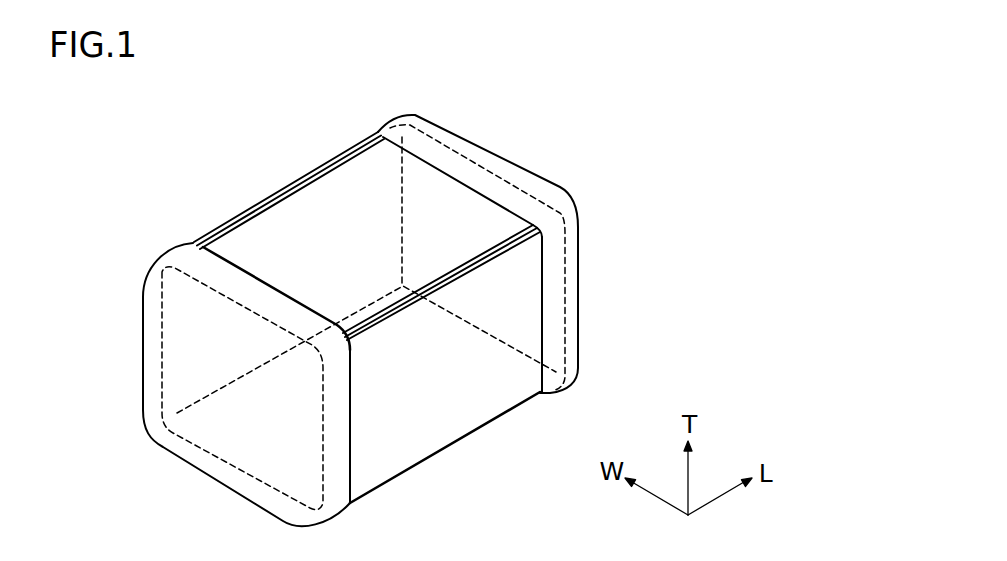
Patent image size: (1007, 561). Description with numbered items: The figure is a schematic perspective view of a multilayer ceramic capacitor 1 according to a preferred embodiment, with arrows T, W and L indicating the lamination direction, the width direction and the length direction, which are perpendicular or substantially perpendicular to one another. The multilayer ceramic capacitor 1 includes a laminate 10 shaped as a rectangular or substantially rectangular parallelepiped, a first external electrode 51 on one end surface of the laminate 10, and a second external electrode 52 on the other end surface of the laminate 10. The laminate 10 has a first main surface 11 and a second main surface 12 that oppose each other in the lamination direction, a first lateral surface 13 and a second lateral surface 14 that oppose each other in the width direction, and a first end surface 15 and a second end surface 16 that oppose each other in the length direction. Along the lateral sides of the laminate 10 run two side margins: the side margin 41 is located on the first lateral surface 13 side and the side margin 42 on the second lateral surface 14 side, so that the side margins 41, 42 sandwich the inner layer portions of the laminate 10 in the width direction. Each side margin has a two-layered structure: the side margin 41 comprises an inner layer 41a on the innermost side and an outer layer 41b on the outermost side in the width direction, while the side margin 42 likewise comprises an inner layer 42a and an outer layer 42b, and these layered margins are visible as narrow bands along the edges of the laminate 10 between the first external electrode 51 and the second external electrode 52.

The multilayer ceramic capacitor 1 is at (82, 165).
The laminate 10 is at (365, 168).
The first main surface 11 is at (392, 223).
The second main surface 12 is at (377, 447).
The first lateral surface 13 is at (450, 397).
The second lateral surface 14 is at (328, 230).
The first end surface 15 is at (237, 430).
The second end surface 16 is at (473, 213).
The side margin 41 is at (670, 217).
The inner layer 41a is at (543, 236).
The outer layer 41b is at (488, 256).
The side margin 42 is at (216, 141).
The inner layer 42a is at (253, 215).
The outer layer 42b is at (212, 239).
The first external electrode 51 is at (153, 387).
The second external electrode 52 is at (578, 306).